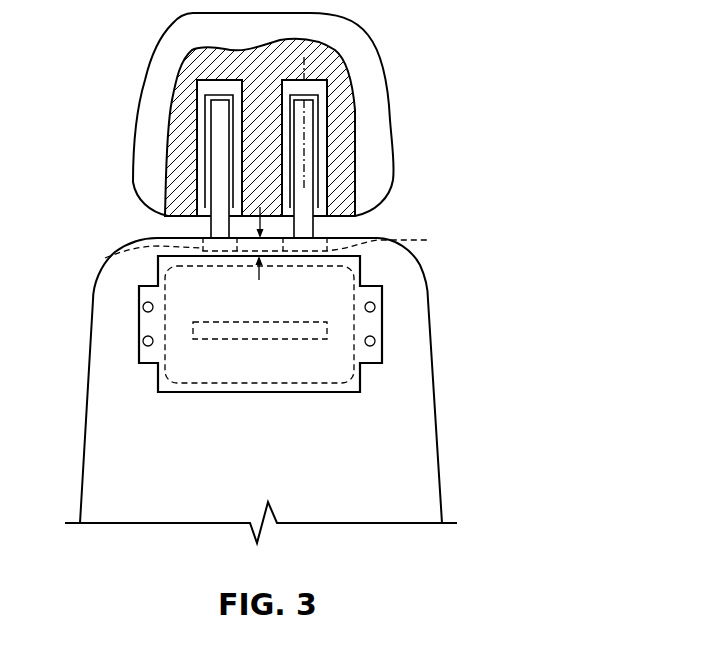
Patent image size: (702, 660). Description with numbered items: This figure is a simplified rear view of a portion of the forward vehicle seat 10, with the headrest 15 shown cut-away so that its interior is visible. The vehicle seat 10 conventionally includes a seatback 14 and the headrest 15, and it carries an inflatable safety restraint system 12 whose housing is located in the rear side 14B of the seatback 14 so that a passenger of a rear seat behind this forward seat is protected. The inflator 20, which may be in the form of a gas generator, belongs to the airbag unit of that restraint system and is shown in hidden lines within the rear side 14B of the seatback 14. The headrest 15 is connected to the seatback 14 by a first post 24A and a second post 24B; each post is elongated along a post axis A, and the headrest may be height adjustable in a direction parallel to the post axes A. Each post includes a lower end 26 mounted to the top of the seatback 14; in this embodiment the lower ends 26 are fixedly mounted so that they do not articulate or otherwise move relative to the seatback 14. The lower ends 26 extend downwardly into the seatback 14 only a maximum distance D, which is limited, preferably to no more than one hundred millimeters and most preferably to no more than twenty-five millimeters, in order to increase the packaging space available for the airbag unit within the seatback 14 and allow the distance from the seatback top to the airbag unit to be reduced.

The vehicle seat 10 is at (474, 484).
The inflatable safety restraint system 12 is at (507, 48).
The seatback 14 is at (437, 378).
The rear side of seatback 14B is at (415, 293).
The headrest 15 is at (150, 53).
The inflator 20 is at (210, 339).
The first post 24A is at (211, 231).
The second post 24B is at (313, 233).
The lower end of post 26 is at (105, 258).
The post axis A is at (304, 58).
The maximum distance D is at (260, 240).